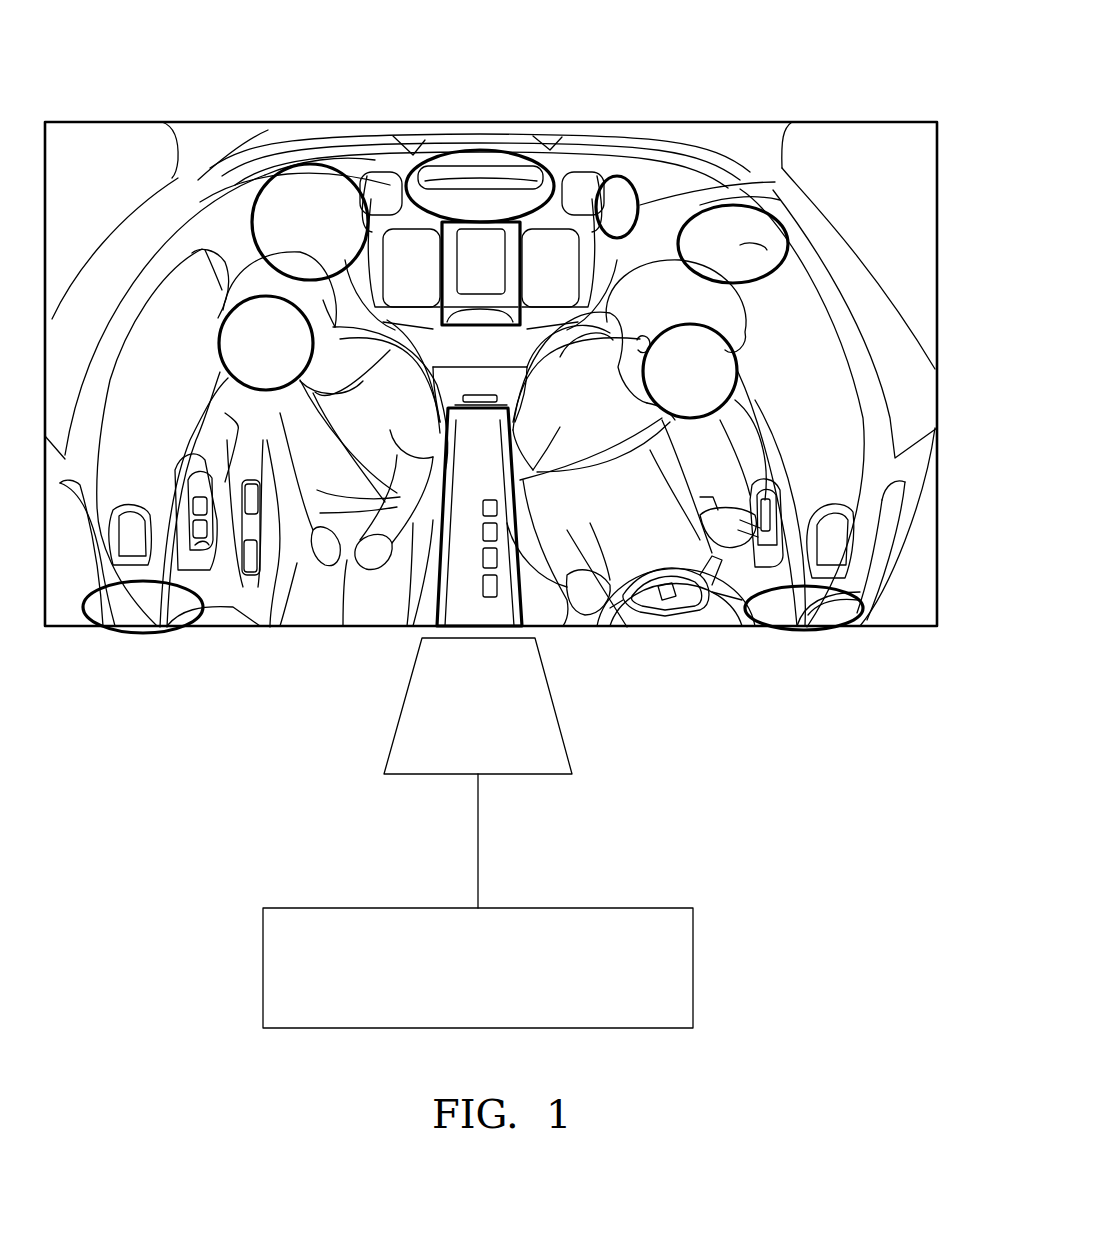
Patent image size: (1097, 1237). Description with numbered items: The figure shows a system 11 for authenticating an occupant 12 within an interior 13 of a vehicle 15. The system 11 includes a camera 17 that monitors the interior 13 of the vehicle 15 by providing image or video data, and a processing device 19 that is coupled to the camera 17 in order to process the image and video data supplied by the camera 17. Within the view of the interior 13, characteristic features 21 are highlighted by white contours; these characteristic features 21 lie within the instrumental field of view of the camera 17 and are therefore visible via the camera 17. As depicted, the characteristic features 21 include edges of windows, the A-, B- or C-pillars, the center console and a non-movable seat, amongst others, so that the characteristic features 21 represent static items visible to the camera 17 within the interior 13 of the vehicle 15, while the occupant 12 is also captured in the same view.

The system 11 is at (232, 843).
The occupant 12 is at (290, 597).
The interior 13 is at (862, 155).
The vehicle 15 is at (912, 662).
The camera 17 is at (545, 770).
The processing device 19 is at (637, 1017).
The characteristic features 21 is at (300, 200).